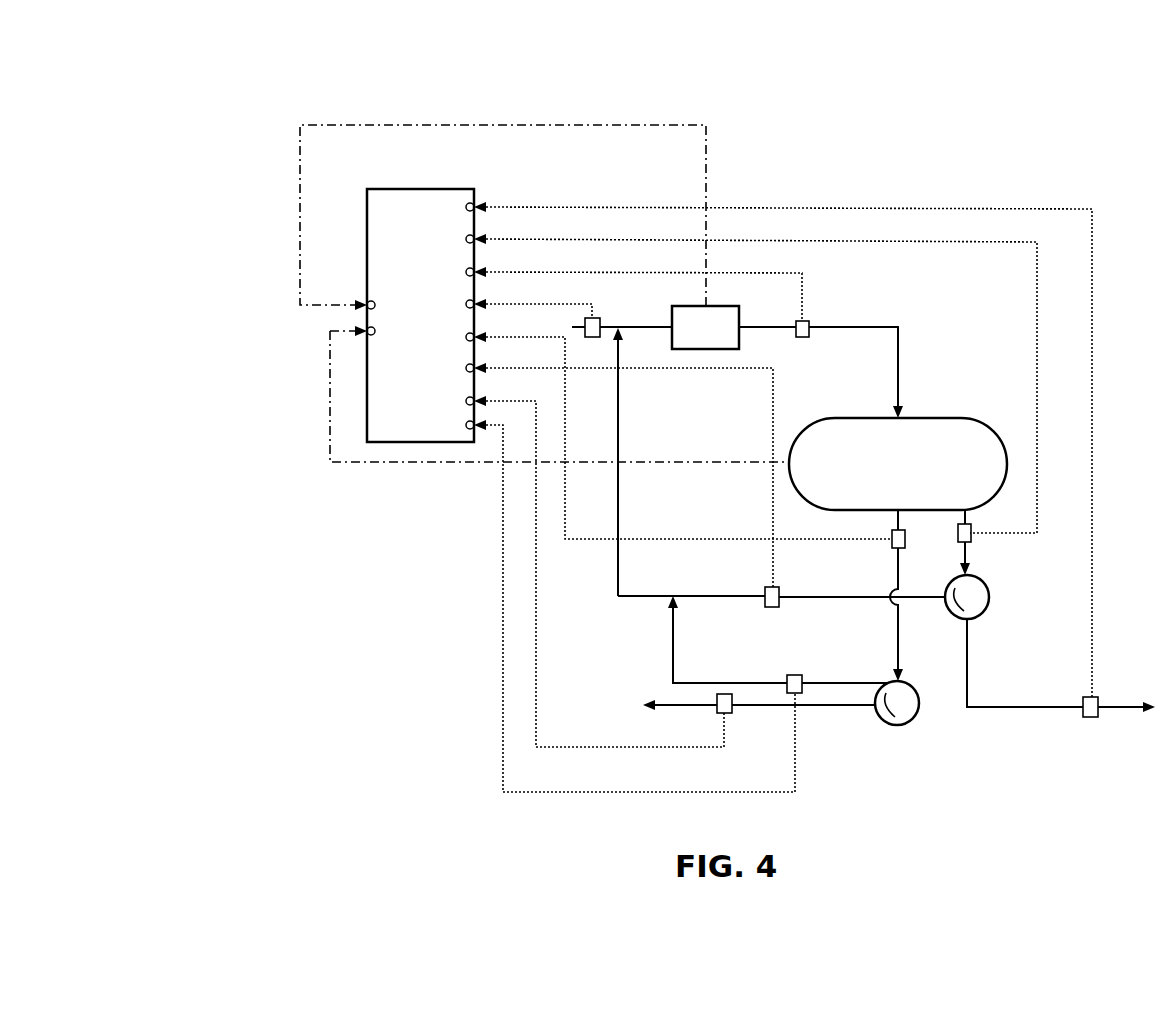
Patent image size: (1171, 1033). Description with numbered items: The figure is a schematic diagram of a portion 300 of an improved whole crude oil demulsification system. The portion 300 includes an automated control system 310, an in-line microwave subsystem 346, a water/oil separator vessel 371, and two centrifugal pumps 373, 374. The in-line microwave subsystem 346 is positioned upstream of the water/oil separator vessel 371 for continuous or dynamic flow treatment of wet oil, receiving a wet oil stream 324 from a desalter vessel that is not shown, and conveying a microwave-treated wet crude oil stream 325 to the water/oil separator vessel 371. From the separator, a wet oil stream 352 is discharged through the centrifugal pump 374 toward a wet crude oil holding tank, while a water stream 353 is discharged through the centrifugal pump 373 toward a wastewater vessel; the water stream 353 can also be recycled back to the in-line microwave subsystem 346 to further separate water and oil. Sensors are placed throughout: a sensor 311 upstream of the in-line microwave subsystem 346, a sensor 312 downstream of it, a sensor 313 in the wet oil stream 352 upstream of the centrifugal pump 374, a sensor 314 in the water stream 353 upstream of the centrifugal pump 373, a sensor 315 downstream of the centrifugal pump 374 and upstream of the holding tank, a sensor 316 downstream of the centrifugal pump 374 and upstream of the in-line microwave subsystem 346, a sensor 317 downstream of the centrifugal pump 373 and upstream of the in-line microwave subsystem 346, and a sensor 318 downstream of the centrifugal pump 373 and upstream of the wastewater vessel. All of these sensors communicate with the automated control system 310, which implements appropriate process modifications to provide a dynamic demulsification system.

The portion of an improved whole crude oil demulsification system 300 is at (216, 90).
The automated control system 310 is at (426, 315).
The sensor 311 is at (600, 320).
The sensor 312 is at (809, 327).
The sensor 313 is at (958, 542).
The sensor 314 is at (892, 548).
The sensor 315 is at (1090, 717).
The sensor 316 is at (772, 607).
The sensor 317 is at (790, 677).
The sensor 318 is at (732, 710).
The wet oil stream 324 is at (633, 329).
The microwave-treated wet crude oil stream 325 is at (873, 327).
The in-line microwave subsystem 346 is at (705, 327).
The wet oil stream 352 is at (966, 556).
The water stream 353 is at (899, 652).
The water/oil separator vessel 371 is at (898, 464).
The centrifugal pump 373 is at (907, 728).
The centrifugal pump 374 is at (1004, 594).